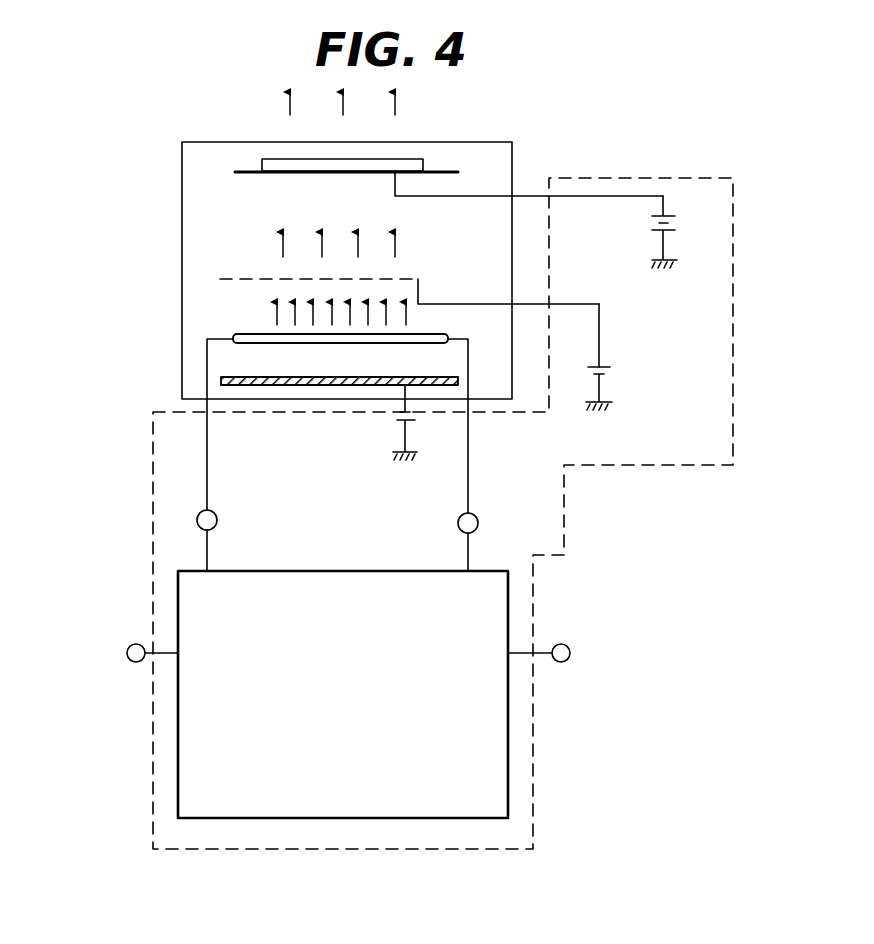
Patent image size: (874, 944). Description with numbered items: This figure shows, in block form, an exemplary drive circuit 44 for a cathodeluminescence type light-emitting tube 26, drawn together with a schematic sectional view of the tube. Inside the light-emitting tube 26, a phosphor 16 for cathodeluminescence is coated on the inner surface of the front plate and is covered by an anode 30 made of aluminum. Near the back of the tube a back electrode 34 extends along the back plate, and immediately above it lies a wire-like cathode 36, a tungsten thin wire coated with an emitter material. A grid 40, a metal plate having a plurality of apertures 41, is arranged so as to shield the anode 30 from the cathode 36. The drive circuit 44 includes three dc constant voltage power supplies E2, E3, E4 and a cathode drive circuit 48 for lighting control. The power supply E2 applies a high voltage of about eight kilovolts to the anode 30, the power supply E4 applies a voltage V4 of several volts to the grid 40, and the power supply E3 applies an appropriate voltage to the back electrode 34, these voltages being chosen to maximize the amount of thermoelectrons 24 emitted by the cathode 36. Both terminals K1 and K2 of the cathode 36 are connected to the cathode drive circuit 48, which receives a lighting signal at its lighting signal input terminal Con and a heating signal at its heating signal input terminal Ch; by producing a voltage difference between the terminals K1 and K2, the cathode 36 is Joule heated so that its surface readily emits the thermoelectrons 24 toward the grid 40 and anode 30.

The phosphor 16 is at (404, 159).
The anode 30 is at (440, 171).
The light-emitting tube 26 is at (512, 172).
The thermoelectrons 24 is at (283, 252).
The grid apertures 41 is at (360, 280).
The grid 40 is at (447, 279).
The back electrode 34 is at (289, 385).
The cathode 36 is at (430, 347).
The cathode drive circuit 48 is at (362, 709).
The drive circuit 44 is at (533, 727).
The terminal K1 is at (485, 542).
The terminal K2 is at (225, 540).
The dc constant voltage power supply E2 is at (680, 232).
The dc constant voltage power supply E3 is at (420, 422).
The dc constant voltage power supply E4 is at (614, 384).
The grid voltage V4 is at (618, 333).
The lighting signal input terminal Con is at (148, 637).
The heating signal input terminal Ch is at (540, 640).